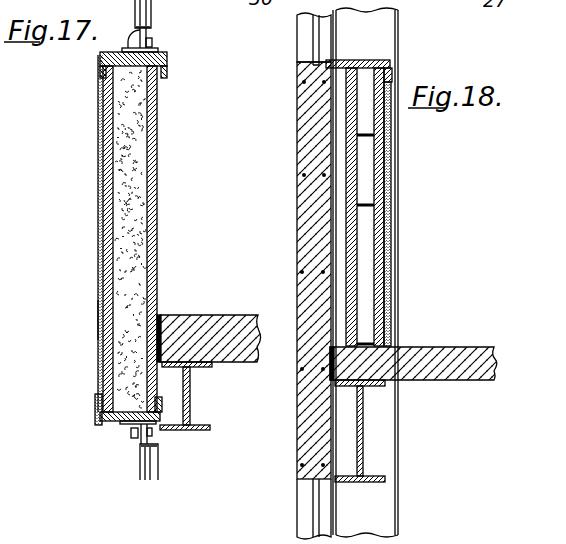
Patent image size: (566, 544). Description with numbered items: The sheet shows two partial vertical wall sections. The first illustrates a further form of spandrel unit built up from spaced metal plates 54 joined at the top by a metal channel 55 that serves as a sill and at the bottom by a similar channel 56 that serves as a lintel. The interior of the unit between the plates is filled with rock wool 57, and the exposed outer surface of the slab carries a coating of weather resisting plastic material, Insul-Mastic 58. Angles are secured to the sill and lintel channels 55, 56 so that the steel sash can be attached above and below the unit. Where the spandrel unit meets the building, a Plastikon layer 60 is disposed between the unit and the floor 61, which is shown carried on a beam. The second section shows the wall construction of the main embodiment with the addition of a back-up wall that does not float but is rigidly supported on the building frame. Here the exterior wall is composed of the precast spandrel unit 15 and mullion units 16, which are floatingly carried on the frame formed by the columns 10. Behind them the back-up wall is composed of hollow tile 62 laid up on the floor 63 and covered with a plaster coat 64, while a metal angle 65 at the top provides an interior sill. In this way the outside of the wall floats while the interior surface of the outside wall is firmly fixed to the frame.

In FIG. 18, the column 10 is at (380, 497).
In FIG. 18, the precast slab spandrel unit 15 is at (316, 216).
In FIG. 18, the precast slab mullion unit 16 is at (297, 42).
In FIG. 17, the metal plates 54 is at (110, 139).
In FIG. 17, the metal channel sill 55 is at (167, 62).
In FIG. 17, the channel lintel 56 is at (95, 409).
In FIG. 17, the rock wool 57 is at (130, 368).
In FIG. 17, the weather resisting plastic coating 58 is at (100, 319).
In FIG. 17, the Plastikon layer 60 is at (163, 319).
In FIG. 17, the floor 61 is at (221, 322).
In FIG. 18, the hollow tile 62 is at (366, 175).
In FIG. 18, the floor 63 is at (440, 359).
In FIG. 18, the plaster coat 64 is at (390, 242).
In FIG. 18, the metal angle 65 is at (372, 62).